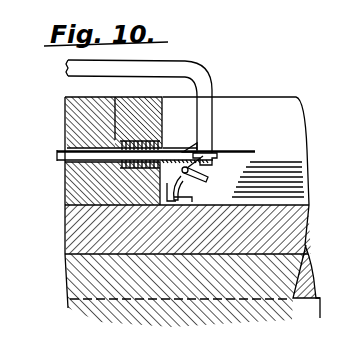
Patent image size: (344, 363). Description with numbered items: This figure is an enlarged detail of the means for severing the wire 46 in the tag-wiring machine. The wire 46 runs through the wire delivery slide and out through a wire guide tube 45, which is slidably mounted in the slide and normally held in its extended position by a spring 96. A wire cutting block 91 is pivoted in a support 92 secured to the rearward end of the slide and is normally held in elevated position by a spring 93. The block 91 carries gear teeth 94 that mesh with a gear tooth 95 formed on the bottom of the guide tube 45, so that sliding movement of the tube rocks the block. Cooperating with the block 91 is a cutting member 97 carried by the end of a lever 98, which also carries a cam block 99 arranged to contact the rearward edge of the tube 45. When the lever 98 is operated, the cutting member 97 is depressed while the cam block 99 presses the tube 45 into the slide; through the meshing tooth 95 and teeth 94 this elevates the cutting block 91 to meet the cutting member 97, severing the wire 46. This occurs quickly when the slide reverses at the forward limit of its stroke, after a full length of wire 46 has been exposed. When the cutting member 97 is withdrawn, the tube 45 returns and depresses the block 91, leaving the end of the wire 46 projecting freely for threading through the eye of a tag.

The wire guide tube 45 is at (173, 146).
The wire 46 is at (57, 153).
The wire cutting block 91 is at (207, 175).
The support 92 is at (193, 198).
The spring 93 is at (188, 188).
The gear teeth 94 is at (201, 172).
The gear tooth 95 is at (170, 186).
The spring 96 is at (115, 97).
The cutting member 97 is at (216, 153).
The lever 98 is at (139, 95).
The cam block 99 is at (192, 146).